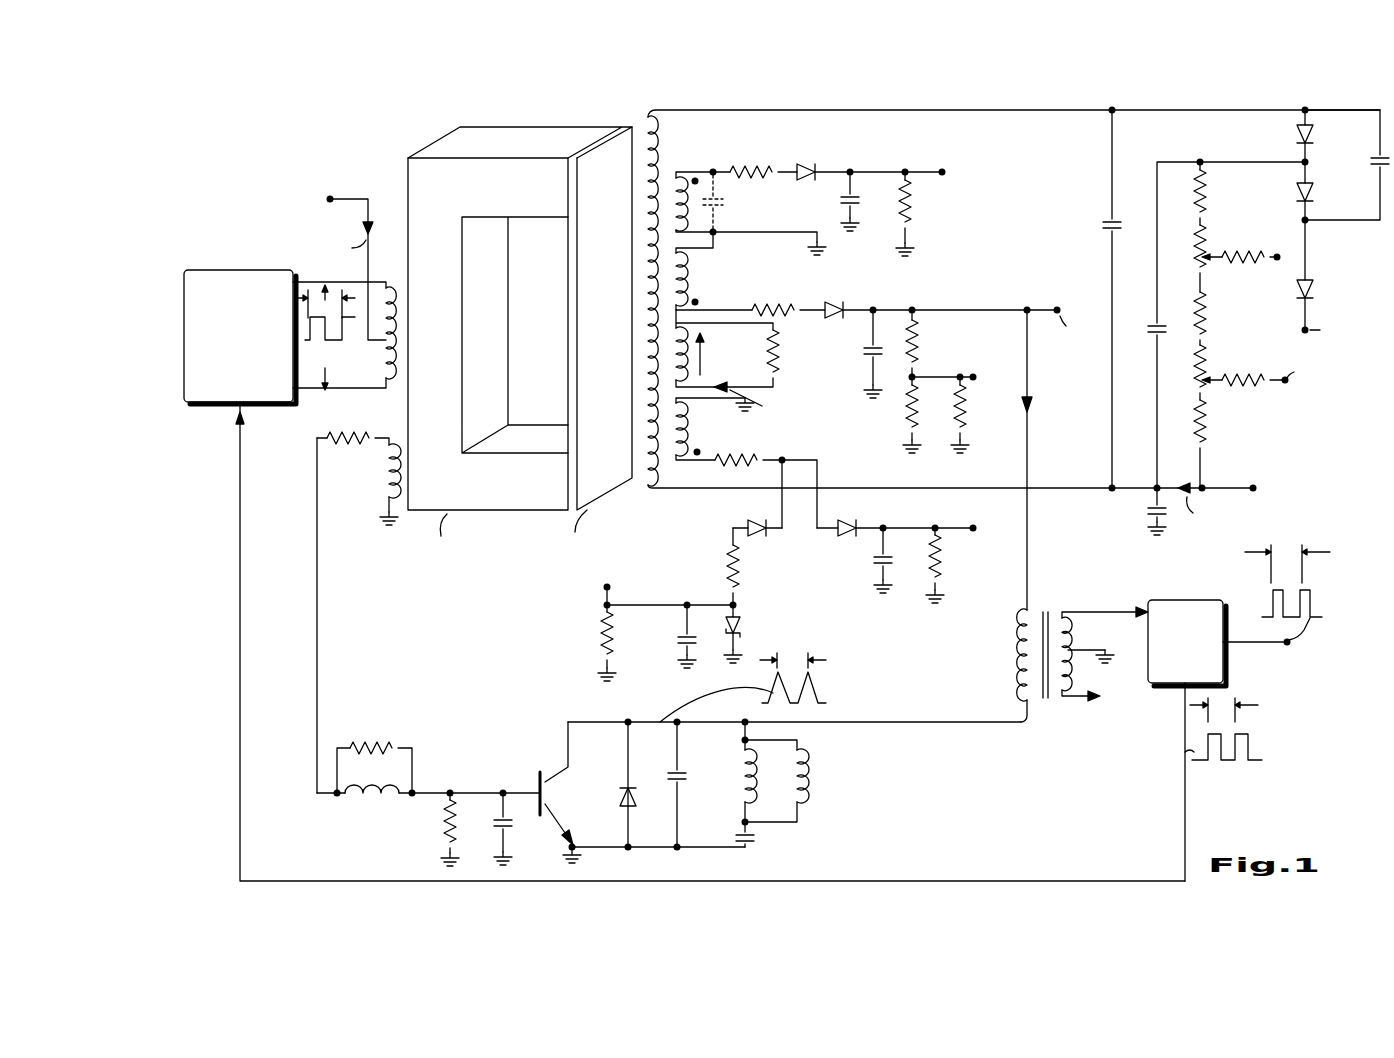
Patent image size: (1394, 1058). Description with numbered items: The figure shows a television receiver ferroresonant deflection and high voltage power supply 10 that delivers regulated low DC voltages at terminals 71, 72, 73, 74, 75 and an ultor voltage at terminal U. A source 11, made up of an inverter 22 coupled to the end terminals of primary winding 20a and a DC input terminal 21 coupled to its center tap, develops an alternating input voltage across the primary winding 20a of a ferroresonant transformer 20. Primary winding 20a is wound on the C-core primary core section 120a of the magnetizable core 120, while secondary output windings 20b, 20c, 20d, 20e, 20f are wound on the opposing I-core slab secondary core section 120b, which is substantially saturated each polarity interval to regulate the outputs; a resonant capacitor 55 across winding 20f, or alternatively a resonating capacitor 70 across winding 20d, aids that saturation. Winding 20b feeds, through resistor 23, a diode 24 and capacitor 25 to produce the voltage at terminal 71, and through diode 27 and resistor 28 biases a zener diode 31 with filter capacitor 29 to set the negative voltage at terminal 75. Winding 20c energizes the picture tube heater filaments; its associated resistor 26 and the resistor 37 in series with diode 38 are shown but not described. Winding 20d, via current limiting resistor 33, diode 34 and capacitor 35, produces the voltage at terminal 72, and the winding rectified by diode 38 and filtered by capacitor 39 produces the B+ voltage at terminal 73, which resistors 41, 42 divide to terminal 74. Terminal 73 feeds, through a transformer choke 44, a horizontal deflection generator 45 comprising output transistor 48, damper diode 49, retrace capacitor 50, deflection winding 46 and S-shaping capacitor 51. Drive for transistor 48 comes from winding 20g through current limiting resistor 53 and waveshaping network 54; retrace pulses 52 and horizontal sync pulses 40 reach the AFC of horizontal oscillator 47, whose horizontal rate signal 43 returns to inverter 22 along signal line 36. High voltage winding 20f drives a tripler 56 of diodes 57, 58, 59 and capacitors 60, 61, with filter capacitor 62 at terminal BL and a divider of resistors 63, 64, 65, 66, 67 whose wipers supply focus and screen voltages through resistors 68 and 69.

The ferroresonant deflection and high voltage power supply 10 is at (228, 155).
The alternating input voltage source 11 is at (291, 439).
The ferroresonant transformer 20 is at (507, 329).
The magnetizable core 120 is at (518, 495).
The primary core section 120a is at (406, 159).
The secondary core section 120b is at (611, 495).
The primary winding 20a is at (380, 363).
The secondary output winding 20b is at (688, 439).
The secondary output winding 20c is at (754, 352).
The secondary output winding 20d is at (686, 170).
The secondary output winding 20e is at (684, 290).
The high voltage winding 20f is at (655, 143).
The drive winding 20g is at (380, 462).
The DC input terminal 21 is at (332, 200).
The inverter 22 is at (248, 263).
The resistor 23 is at (779, 459).
The diode 24 is at (847, 526).
The capacitor 25 is at (873, 575).
The resistor 26 is at (776, 376).
The diode 27 is at (755, 523).
The resistor 28 is at (741, 566).
The filter capacitor 29 is at (675, 644).
The zener diode 31 is at (748, 623).
The current limiting resistor 33 is at (750, 168).
The diode 34 is at (816, 168).
The capacitor 35 is at (857, 206).
The signal line 36 is at (1185, 801).
The resistor 37 is at (791, 306).
The diode 38 is at (847, 307).
The capacitor 39 is at (866, 338).
The horizontal sync pulses 40 is at (1312, 593).
The resistor 41 is at (939, 344).
The resistor 42 is at (917, 417).
The horizontal rate signal 43 is at (1232, 728).
The transformer choke 44 is at (1069, 725).
The horizontal deflection generator 45 is at (686, 873).
The horizontal deflection winding 46 is at (818, 774).
The horizontal oscillator 47 is at (1172, 603).
The horizontal output transistor 48 is at (560, 792).
The damper diode 49 is at (635, 801).
The retrace capacitor 50 is at (696, 778).
The S-shaping capacitor 51 is at (757, 840).
The retrace pulses 52 is at (822, 678).
The current limiting resistor 53 is at (330, 436).
The waveshaping network 54 is at (466, 782).
The resonant capacitor 55 is at (1103, 220).
The high voltage tripler 56 is at (1241, 146).
The diode 57 is at (1315, 135).
The diode 58 is at (1312, 205).
The diode 59 is at (1313, 281).
The capacitor 60 is at (1162, 335).
The capacitor 61 is at (1370, 157).
The filter capacitor 62 is at (1147, 523).
The resistor 63 is at (1196, 209).
The resistor 64 is at (1196, 263).
The resistor 65 is at (1207, 316).
The resistor 66 is at (1195, 385).
The resistor 67 is at (1206, 452).
The resistor 68 is at (1283, 247).
The resistor 69 is at (1251, 380).
The resonating capacitor 70 is at (722, 208).
The supply terminal 71 is at (973, 526).
The supply terminal 72 is at (942, 170).
The supply terminal 73 is at (1030, 307).
The supply terminal 74 is at (973, 374).
The supply terminal 75 is at (605, 605).